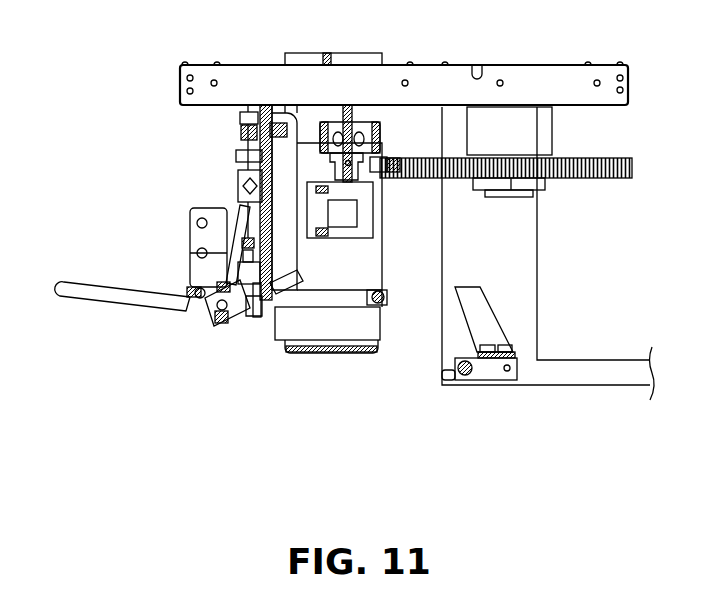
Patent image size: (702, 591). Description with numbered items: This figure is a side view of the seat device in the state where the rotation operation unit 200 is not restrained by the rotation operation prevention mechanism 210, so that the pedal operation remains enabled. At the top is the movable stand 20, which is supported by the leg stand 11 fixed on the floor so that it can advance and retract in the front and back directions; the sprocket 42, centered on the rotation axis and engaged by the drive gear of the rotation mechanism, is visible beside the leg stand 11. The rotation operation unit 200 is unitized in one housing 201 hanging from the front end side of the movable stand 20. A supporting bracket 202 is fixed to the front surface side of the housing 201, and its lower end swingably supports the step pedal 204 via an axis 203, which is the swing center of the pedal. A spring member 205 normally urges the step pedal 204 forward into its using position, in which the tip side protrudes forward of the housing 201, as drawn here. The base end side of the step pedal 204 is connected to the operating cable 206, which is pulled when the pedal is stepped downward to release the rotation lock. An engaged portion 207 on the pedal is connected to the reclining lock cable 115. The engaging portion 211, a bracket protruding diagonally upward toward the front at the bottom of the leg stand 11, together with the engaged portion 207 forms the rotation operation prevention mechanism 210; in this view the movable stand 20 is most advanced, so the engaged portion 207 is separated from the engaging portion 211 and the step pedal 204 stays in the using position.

The movable stand 20 is at (180, 73).
The housing 201 is at (296, 150).
The operating cable 206 is at (240, 155).
The rotation operation unit 200 is at (177, 198).
The supporting bracket 202 is at (190, 222).
The spring member 205 is at (197, 254).
The step pedal 204 is at (82, 297).
The axis 203 is at (205, 295).
The engaged portion 207 is at (220, 317).
The reclining lock cable 115 is at (258, 310).
The sprocket 42 is at (617, 157).
The leg stand 11 is at (537, 267).
The rotation operation prevention mechanism 210 is at (497, 313).
The engaging portion 211 is at (479, 322).